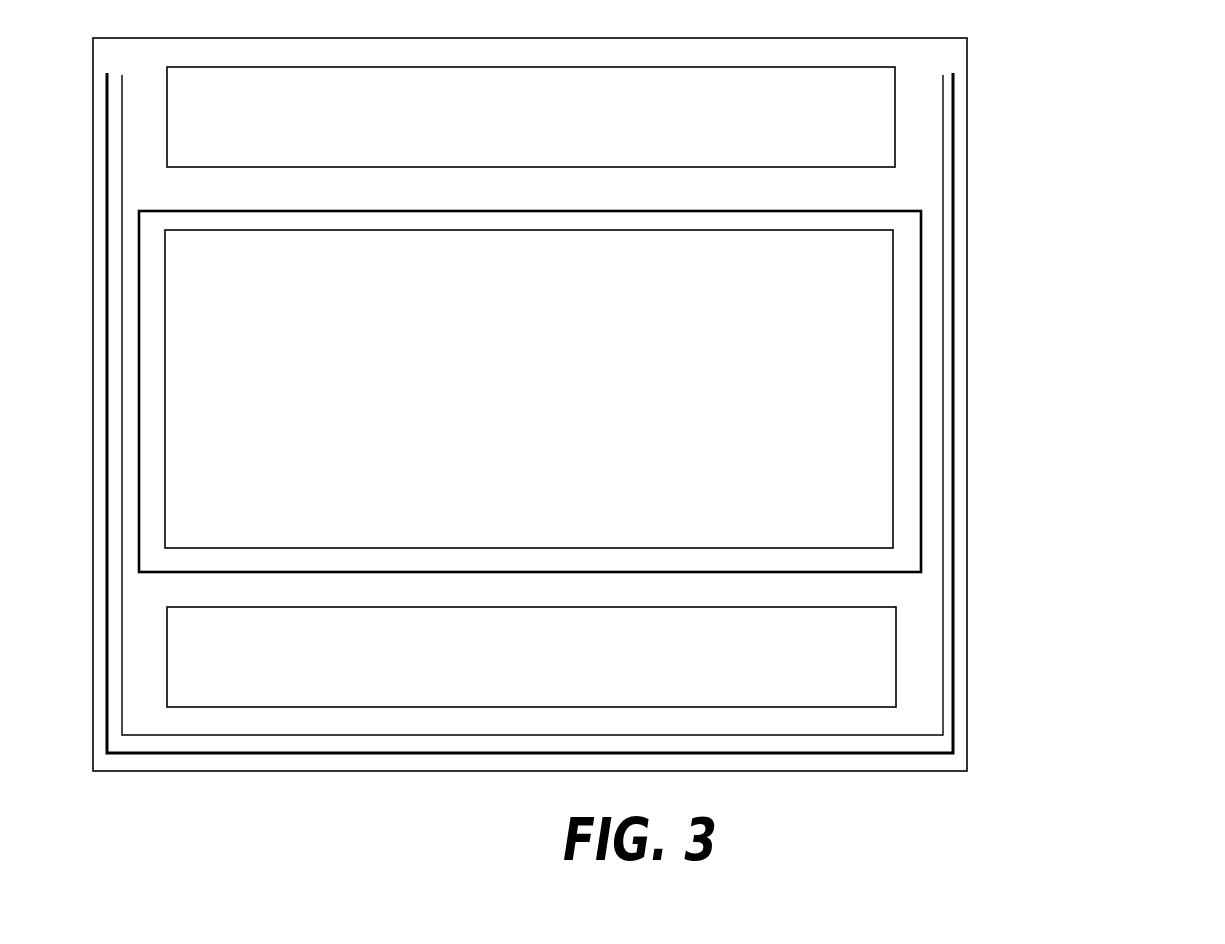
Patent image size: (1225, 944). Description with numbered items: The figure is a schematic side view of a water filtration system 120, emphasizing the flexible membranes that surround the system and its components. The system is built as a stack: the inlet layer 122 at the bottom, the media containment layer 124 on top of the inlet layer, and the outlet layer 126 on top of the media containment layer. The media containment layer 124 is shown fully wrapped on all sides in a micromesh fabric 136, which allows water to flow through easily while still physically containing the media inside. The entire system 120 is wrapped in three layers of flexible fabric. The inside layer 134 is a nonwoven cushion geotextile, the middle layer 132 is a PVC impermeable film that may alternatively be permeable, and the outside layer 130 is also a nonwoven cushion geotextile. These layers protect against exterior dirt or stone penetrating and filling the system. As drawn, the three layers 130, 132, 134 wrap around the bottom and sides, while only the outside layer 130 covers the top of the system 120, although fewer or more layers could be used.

The water filtration system 120 is at (658, 440).
The inlet layer 122 is at (873, 659).
The media containment layer 124 is at (867, 323).
The outlet layer 126 is at (875, 98).
The outside layer 130 is at (968, 702).
The middle layer 132 is at (955, 757).
The inside layer 134 is at (866, 733).
The micromesh fabric 136 is at (921, 492).